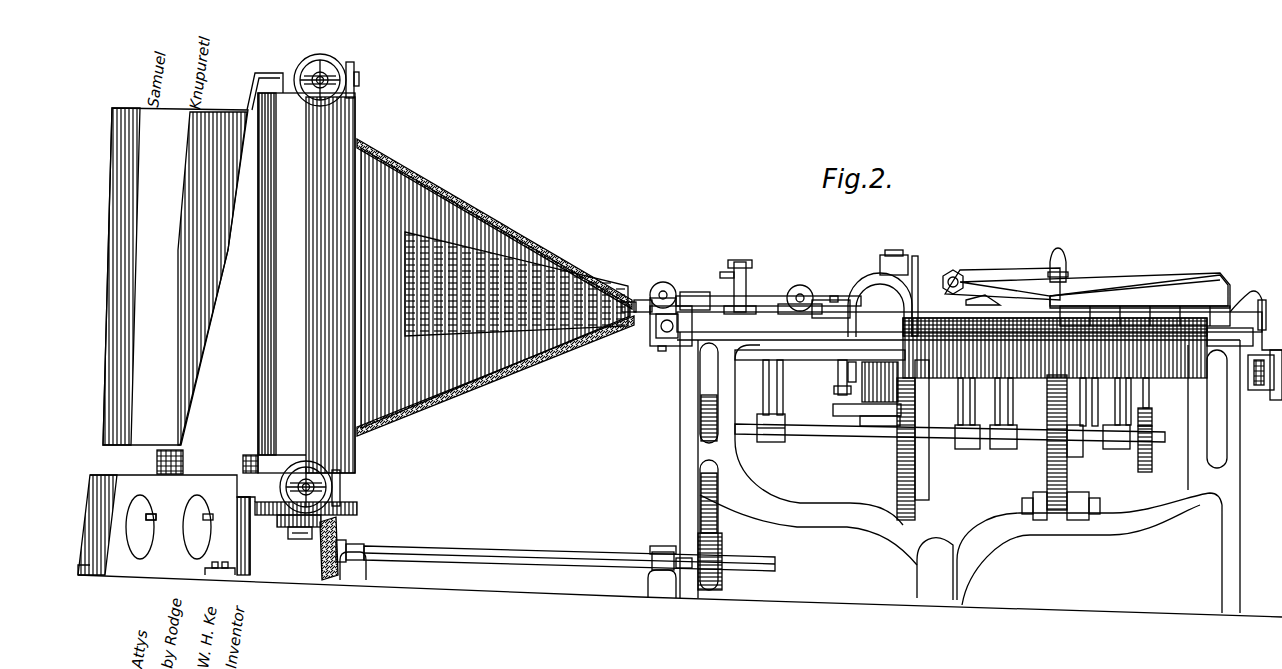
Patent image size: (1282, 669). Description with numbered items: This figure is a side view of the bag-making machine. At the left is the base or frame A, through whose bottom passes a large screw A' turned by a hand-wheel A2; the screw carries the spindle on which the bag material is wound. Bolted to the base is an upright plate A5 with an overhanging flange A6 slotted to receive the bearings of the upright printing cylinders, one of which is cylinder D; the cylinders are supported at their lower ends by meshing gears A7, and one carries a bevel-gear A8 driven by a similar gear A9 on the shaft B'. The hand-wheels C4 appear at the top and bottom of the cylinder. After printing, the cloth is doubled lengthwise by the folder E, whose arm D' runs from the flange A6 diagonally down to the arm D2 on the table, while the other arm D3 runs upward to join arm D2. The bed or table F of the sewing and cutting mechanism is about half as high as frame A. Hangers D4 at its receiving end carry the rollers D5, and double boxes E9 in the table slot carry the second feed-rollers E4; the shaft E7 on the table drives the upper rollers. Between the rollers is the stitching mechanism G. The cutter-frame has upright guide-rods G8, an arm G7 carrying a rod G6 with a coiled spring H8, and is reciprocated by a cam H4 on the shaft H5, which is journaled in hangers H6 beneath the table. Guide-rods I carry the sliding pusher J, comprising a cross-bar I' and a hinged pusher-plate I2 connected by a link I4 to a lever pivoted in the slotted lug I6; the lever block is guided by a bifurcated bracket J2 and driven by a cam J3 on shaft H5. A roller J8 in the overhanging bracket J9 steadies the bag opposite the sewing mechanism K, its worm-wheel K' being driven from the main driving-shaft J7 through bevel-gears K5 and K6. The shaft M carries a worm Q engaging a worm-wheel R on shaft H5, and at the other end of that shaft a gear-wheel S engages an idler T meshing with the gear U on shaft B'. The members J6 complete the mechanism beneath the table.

The base or frame A is at (164, 525).
The large screw A' is at (140, 462).
The hand-wheel A2 is at (144, 517).
The upright plate A5 is at (222, 372).
The overhanging flange A6 is at (278, 78).
The meshing gears A7 is at (358, 508).
The bevel-gear A8 is at (282, 526).
The bevel-gear A9 is at (330, 577).
The shaft B' is at (557, 559).
The hand wheel C4 is at (324, 60).
The upright cylinder D is at (299, 283).
The folder arm D' is at (494, 224).
The arm D2 is at (641, 300).
The folder arm D3 is at (498, 372).
The brackets or hangers D4 is at (652, 340).
The rollers D5 is at (666, 281).
The folder E is at (628, 298).
The feed-rollers E4 is at (801, 284).
The shaft E7 is at (712, 296).
The double boxes or bearings E9 is at (826, 300).
The bed or table F is at (954, 462).
The stitching mechanism G is at (738, 276).
The rod G6 is at (859, 372).
The arm G7 is at (868, 412).
The upright guide-rods G8 is at (880, 382).
The cam or eccentric H4 is at (897, 489).
The shaft H5 is at (810, 432).
The brackets or hangers H6 is at (784, 392).
The coiled spring H8 is at (815, 410).
The guide-rods I is at (957, 273).
The cross-bar or frame I' is at (1002, 269).
The pusher-plate I2 is at (983, 300).
The link I4 is at (1065, 262).
The slotted lug I6 is at (1042, 504).
The sliding pusher J is at (1095, 280).
The bifurcated bracket J2 is at (1025, 445).
The cam J3 is at (1047, 468).
The post J6 is at (838, 386).
The main driving-shaft J7 is at (812, 348).
The roller J8 is at (1140, 308).
The overhanging arm or bracket J9 is at (1139, 290).
The sewing mechanism K is at (880, 283).
The worm-wheel K' is at (1256, 310).
The bevel-gear K5 is at (1256, 390).
The bevel-gear K6 is at (1272, 402).
The shaft M is at (1149, 394).
The worm Q is at (1152, 414).
The worm-wheel R is at (1152, 458).
The gear-wheel S is at (700, 410).
The idler T is at (719, 513).
The gear U is at (723, 540).